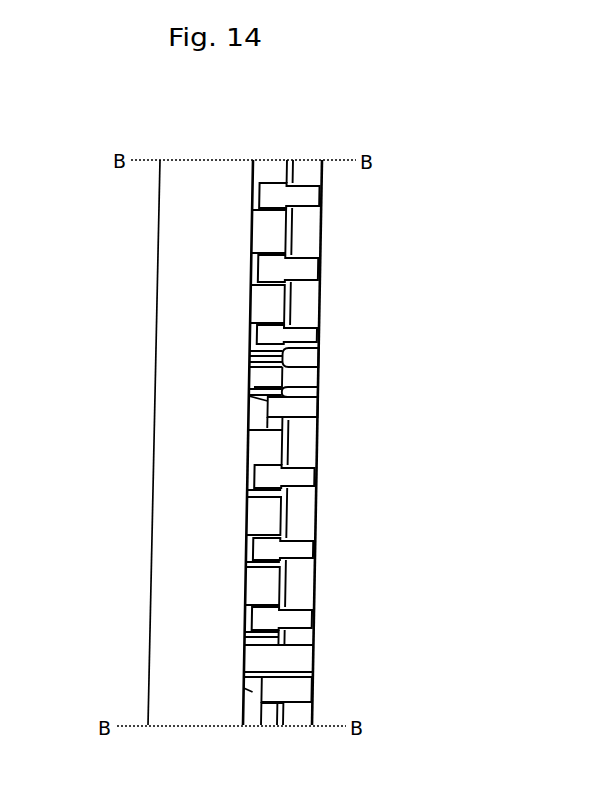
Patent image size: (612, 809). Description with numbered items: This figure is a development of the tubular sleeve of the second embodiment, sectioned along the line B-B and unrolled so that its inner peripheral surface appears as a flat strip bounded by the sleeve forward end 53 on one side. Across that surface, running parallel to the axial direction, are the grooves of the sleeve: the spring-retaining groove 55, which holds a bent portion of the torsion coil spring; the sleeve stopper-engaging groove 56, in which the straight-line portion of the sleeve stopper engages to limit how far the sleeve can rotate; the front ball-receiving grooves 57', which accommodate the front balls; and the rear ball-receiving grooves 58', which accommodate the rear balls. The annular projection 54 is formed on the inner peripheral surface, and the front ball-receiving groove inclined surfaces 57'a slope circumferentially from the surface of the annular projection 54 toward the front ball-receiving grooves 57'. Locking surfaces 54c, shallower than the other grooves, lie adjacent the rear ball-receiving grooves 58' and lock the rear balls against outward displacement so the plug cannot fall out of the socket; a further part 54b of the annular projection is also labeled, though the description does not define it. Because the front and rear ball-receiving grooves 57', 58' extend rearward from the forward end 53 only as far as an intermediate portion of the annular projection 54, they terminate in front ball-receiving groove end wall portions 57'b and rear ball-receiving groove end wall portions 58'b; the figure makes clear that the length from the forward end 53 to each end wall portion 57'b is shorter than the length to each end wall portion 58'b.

The forward end 53 is at (320, 298).
The annular projection 54 is at (270, 304).
The contact member base portion 54b is at (247, 455).
The locking surfaces 54c is at (253, 213).
The spring-retaining groove 55 is at (302, 658).
The sleeve stopper-engaging groove 56 is at (313, 376).
The front ball-receiving grooves 57' is at (357, 513).
The front ball-receiving groove inclined surfaces 57'a is at (190, 583).
The front ball-receiving groove end wall portions 57'b is at (213, 531).
The rear ball-receiving grooves 58' is at (361, 382).
The rear ball-receiving groove end wall portions 58'b is at (175, 564).